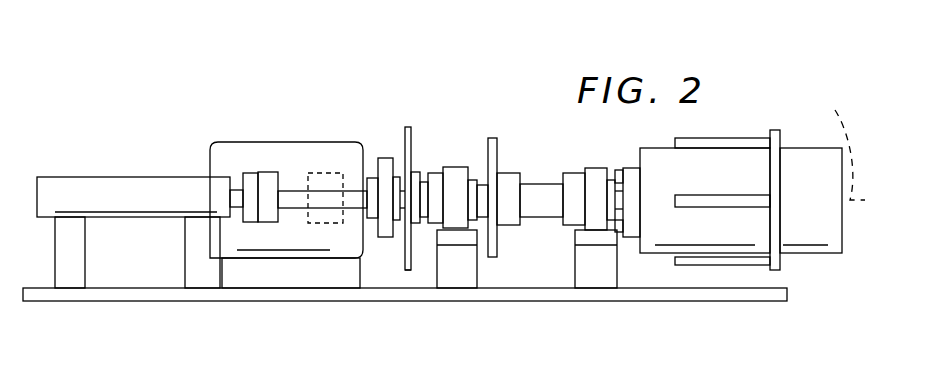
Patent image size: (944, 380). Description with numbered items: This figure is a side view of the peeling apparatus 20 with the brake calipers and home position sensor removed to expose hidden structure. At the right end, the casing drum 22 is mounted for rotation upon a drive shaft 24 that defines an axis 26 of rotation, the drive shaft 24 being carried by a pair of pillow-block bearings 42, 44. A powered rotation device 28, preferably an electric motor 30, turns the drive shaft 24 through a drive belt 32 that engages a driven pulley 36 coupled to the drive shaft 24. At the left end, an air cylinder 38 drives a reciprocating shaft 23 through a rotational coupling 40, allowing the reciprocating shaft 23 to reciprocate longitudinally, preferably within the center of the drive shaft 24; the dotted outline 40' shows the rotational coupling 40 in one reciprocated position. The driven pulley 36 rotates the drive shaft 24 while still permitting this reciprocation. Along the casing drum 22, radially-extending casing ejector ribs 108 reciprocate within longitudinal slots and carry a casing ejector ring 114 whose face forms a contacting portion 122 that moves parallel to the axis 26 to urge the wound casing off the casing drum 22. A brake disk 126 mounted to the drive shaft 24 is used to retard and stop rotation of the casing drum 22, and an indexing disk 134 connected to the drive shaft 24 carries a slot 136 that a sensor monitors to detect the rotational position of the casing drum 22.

The peeling apparatus 20 is at (176, 100).
The casing drum 22 is at (800, 148).
The reciprocating shaft 23 is at (292, 208).
The drive shaft 24 is at (546, 209).
The axis of rotation 26 is at (847, 144).
The powered rotation device 28 is at (197, 152).
The electric motor 30 is at (338, 248).
The drive belt 32 is at (384, 158).
The driven pulley 36 is at (372, 178).
The air cylinder 38 is at (80, 177).
The rotational coupling 40 is at (264, 150).
The reciprocated position of rotational coupling 40' is at (339, 152).
The pillow-block bearing 42 is at (453, 167).
The pillow-block bearing 44 is at (590, 168).
The casing ejector ribs 108 is at (702, 260).
The casing ejector ring 114 is at (778, 263).
The contacting portion 122 is at (780, 178).
The brake disk 126 is at (492, 138).
The indexing disk 134 is at (409, 128).
The slot 136 is at (406, 242).